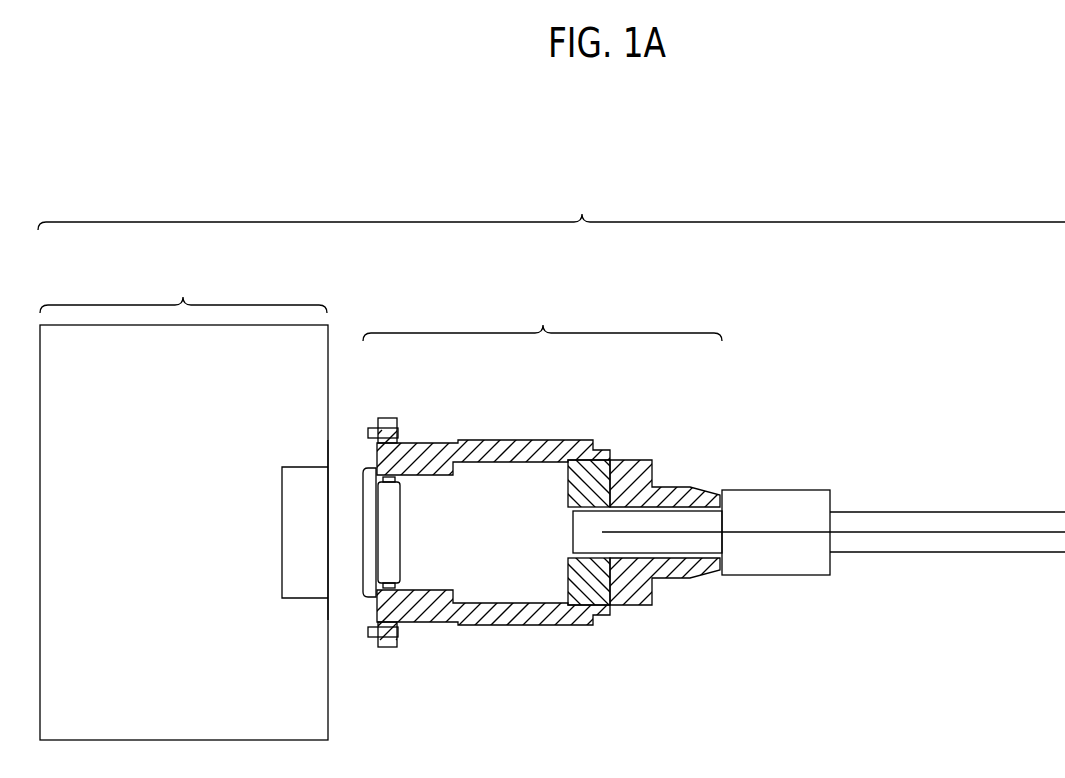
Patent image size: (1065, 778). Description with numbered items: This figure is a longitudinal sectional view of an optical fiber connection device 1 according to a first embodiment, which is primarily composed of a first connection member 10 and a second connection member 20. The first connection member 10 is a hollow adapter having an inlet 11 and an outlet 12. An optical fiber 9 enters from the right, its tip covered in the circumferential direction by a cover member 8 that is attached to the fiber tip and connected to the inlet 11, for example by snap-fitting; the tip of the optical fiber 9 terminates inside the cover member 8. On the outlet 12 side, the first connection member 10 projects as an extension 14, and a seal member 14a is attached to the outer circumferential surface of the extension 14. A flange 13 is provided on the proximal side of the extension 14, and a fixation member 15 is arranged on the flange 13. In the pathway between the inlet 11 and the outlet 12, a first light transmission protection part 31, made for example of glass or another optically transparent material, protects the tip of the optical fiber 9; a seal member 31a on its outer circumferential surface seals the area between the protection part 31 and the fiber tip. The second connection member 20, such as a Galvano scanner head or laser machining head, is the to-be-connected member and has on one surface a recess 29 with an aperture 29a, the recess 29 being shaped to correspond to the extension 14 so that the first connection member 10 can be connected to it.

The optical fiber connection device 1 is at (551, 210).
The second connection member 20 is at (184, 505).
The recess 29 is at (305, 467).
The aperture 29a is at (330, 517).
The first connection member 10 is at (602, 468).
The outlet 12 is at (358, 495).
The flange 13 is at (390, 417).
The extension 14 is at (363, 590).
The seal member 14a is at (366, 636).
The fixation member 15 is at (402, 428).
The first light transmission protection part 31 is at (392, 522).
The seal member 31a is at (415, 590).
The cover member 8 is at (665, 510).
The inlet 11 is at (737, 488).
The optical fiber 9 is at (973, 510).